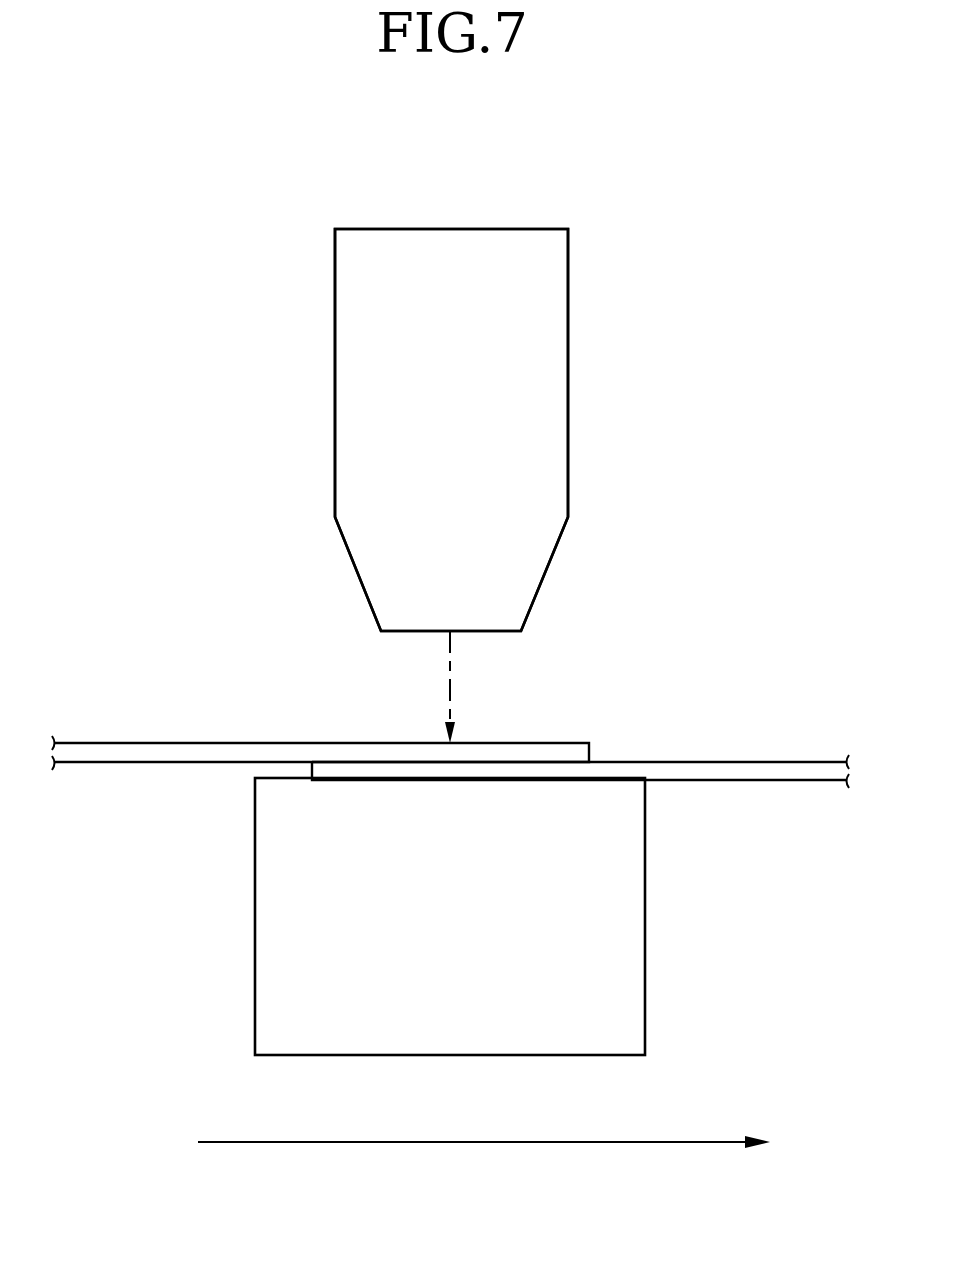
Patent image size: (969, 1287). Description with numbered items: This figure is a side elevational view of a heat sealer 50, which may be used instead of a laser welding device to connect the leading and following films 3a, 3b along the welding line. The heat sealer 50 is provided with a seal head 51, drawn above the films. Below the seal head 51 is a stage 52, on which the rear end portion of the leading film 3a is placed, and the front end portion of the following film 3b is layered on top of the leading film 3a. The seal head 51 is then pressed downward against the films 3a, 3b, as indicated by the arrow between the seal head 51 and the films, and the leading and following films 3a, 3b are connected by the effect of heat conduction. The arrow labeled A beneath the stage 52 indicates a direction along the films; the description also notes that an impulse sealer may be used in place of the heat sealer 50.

The heat sealer 50 is at (252, 424).
The seal head 51 is at (447, 242).
The stage 52 is at (623, 961).
The leading film 3a is at (777, 769).
The following film 3b is at (157, 757).
The moving direction A is at (454, 1140).